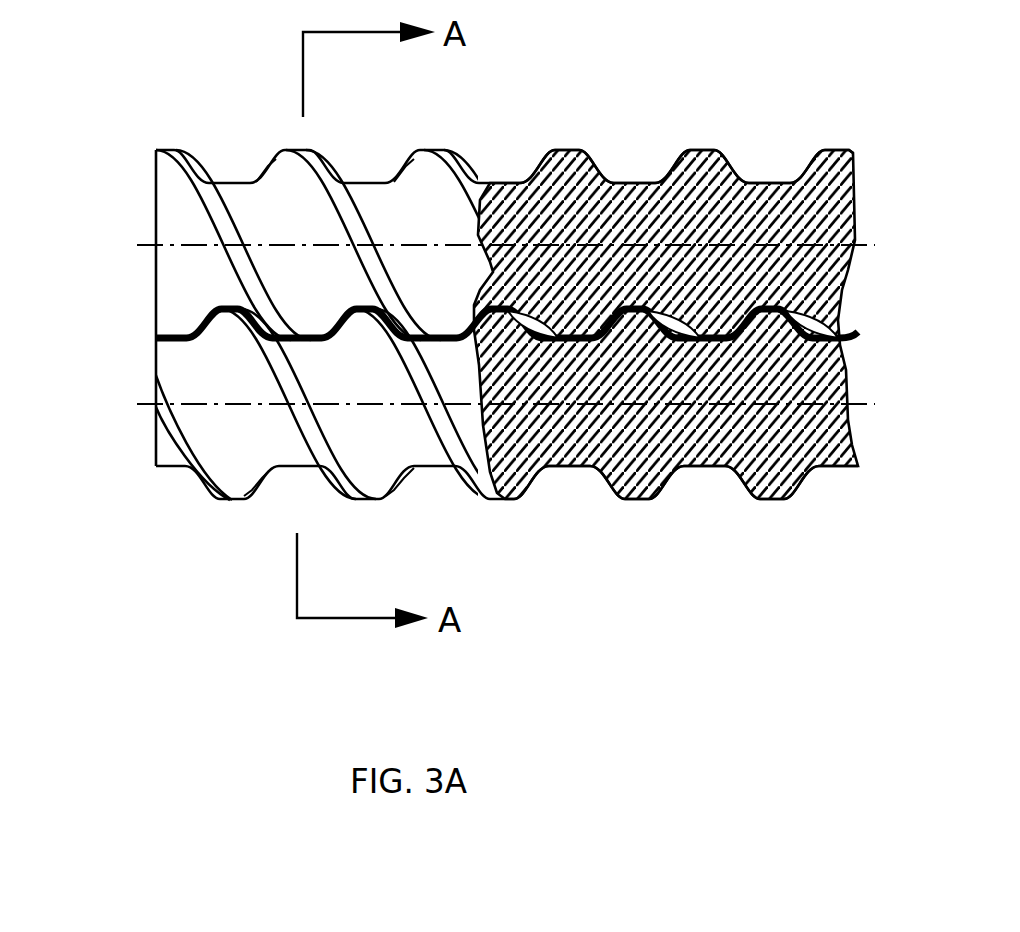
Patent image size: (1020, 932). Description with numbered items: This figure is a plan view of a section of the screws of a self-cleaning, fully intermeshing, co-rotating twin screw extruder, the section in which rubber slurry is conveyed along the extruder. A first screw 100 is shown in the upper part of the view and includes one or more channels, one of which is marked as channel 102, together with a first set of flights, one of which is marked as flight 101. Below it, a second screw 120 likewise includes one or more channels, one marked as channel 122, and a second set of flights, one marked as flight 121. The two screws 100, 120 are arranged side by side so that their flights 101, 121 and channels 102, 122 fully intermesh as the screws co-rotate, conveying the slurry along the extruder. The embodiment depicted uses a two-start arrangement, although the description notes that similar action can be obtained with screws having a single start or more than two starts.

The first screw 100 is at (464, 239).
The flight 101 is at (335, 165).
The channel 102 is at (282, 227).
The second screw 120 is at (459, 447).
The flight 121 is at (334, 474).
The channel 122 is at (238, 423).